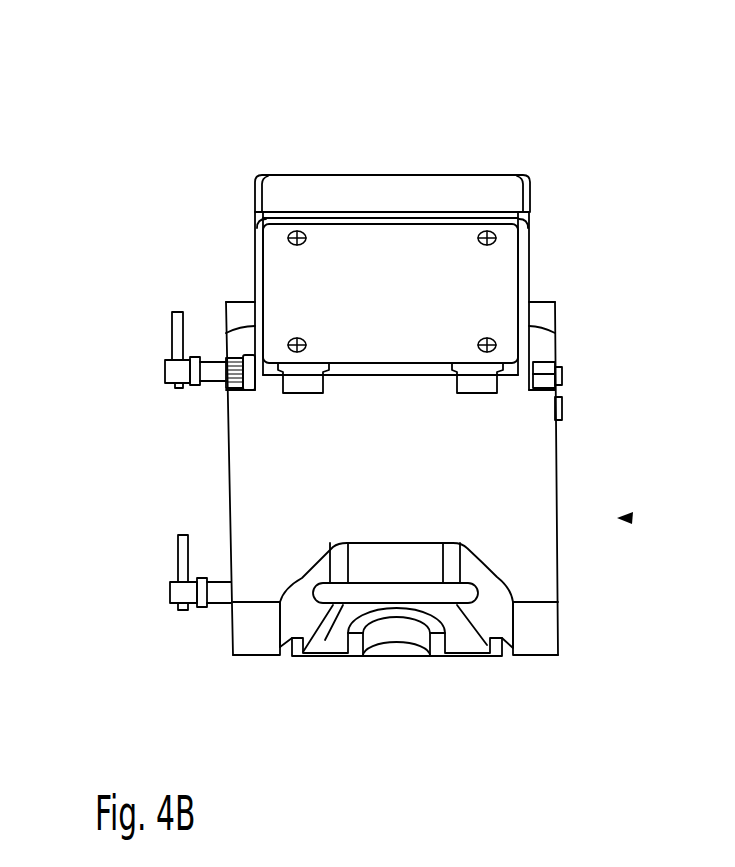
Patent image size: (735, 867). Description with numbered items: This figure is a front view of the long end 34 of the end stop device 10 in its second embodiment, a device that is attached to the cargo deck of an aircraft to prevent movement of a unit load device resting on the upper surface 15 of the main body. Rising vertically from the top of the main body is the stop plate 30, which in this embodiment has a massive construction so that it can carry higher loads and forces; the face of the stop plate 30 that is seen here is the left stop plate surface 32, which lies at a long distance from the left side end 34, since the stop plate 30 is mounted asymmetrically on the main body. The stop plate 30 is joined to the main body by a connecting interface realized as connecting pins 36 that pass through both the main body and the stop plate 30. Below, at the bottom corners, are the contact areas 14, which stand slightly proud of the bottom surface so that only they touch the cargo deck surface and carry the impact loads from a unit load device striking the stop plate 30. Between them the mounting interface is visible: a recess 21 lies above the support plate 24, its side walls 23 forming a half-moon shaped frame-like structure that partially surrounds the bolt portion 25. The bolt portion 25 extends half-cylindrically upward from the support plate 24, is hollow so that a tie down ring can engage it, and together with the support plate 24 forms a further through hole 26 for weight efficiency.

The end stop device 10 is at (274, 100).
The contact areas 14 is at (540, 670).
The upper surface 15 is at (537, 480).
The recess 21 is at (334, 641).
The side walls 23 is at (298, 606).
The support plate 24 is at (465, 637).
The bolt portion 25 is at (440, 630).
The through hole 26 is at (396, 648).
The stop plate 30 is at (381, 192).
The left stop plate surface 32 is at (410, 237).
The left side end 34 is at (632, 518).
The connecting pins 36 is at (165, 372).